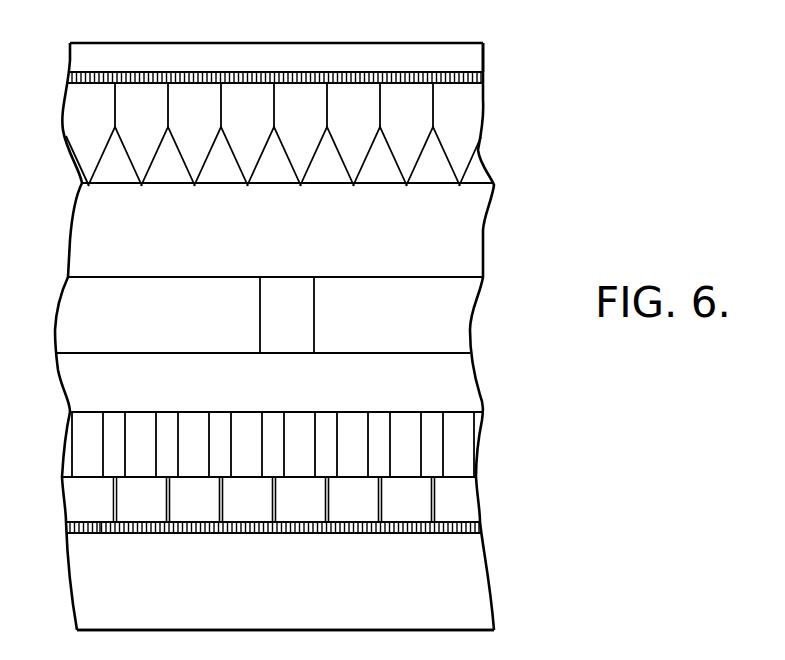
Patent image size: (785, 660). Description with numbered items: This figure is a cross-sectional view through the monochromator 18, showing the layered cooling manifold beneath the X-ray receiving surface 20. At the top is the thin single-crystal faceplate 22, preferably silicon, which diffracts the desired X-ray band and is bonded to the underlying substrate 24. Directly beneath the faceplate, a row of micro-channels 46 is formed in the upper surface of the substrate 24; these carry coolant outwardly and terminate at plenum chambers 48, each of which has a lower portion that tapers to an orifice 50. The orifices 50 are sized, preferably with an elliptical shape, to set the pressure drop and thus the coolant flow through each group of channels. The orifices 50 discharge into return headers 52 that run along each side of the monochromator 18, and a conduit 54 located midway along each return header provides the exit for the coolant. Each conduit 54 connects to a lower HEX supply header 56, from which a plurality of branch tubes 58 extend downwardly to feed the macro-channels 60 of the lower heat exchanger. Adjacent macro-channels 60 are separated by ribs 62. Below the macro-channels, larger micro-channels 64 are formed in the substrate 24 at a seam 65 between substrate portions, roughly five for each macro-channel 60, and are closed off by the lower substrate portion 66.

The monochromator 18 is at (538, 107).
The surface 20 is at (411, 43).
The faceplate 22 is at (484, 63).
The substrate 24 is at (486, 393).
The micro-channels 46 is at (484, 78).
The plenum chamber 48 is at (258, 105).
The orifice 50 is at (142, 184).
The return header 52 is at (292, 259).
The conduit 54 is at (315, 327).
The lower HEX supply header 56 is at (292, 394).
The branch tubes 58 is at (100, 457).
The macro-channels 60 is at (104, 510).
The ribs 62 is at (117, 524).
The larger micro-channels 64 is at (67, 529).
The seam 65 is at (102, 533).
The lower substrate portion 66 is at (488, 598).